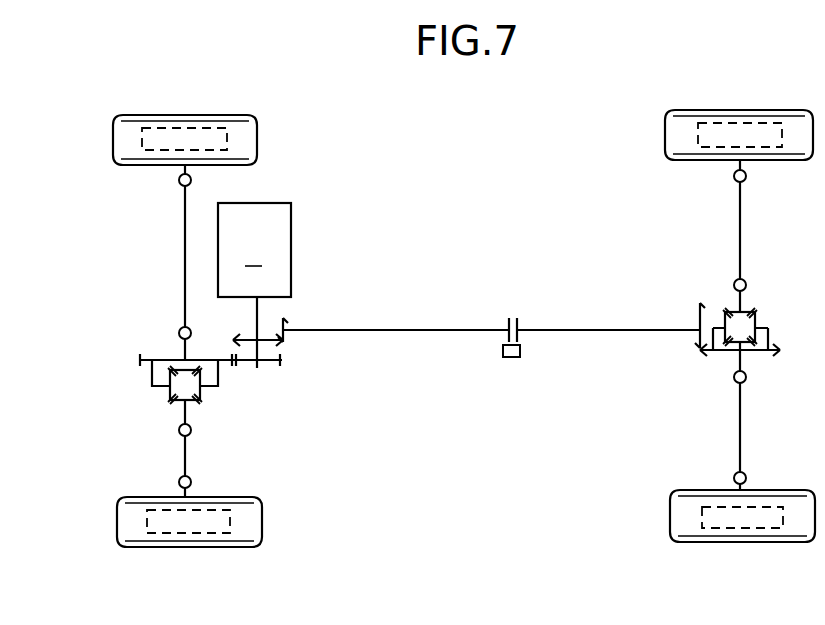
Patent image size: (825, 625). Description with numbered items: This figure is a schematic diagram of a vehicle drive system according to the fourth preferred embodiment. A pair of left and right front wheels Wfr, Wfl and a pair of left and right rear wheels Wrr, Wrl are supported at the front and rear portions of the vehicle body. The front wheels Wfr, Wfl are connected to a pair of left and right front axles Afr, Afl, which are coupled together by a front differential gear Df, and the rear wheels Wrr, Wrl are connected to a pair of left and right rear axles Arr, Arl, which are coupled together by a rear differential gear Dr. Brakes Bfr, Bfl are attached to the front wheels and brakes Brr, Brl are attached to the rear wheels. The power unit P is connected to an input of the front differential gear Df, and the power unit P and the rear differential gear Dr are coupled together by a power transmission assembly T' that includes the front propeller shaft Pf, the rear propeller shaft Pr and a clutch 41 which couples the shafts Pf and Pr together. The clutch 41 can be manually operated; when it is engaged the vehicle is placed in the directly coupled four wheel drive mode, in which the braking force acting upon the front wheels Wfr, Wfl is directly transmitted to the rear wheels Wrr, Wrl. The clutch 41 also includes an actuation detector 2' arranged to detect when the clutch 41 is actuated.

The right front wheel Wfr is at (135, 120).
The brake Bfr is at (207, 127).
The right front axle Afr is at (183, 251).
The power unit P is at (254, 285).
The front differential gear Df is at (216, 398).
The left front axle Afl is at (184, 455).
The left front wheel Wfl is at (150, 548).
The brake Bfl is at (218, 531).
The front propeller shaft Pf is at (377, 328).
The clutch 41 is at (506, 322).
The actuation detector 2' is at (521, 372).
The power transmission assembly T' is at (468, 425).
The rear propeller shaft Pr is at (621, 328).
The right rear wheel Wrr is at (700, 115).
The brake Brr is at (762, 126).
The right rear axle Arr is at (741, 222).
The rear differential gear Dr is at (770, 311).
The left rear axle Arl is at (742, 412).
The left rear wheel Wrl is at (710, 543).
The brake Brl is at (765, 526).